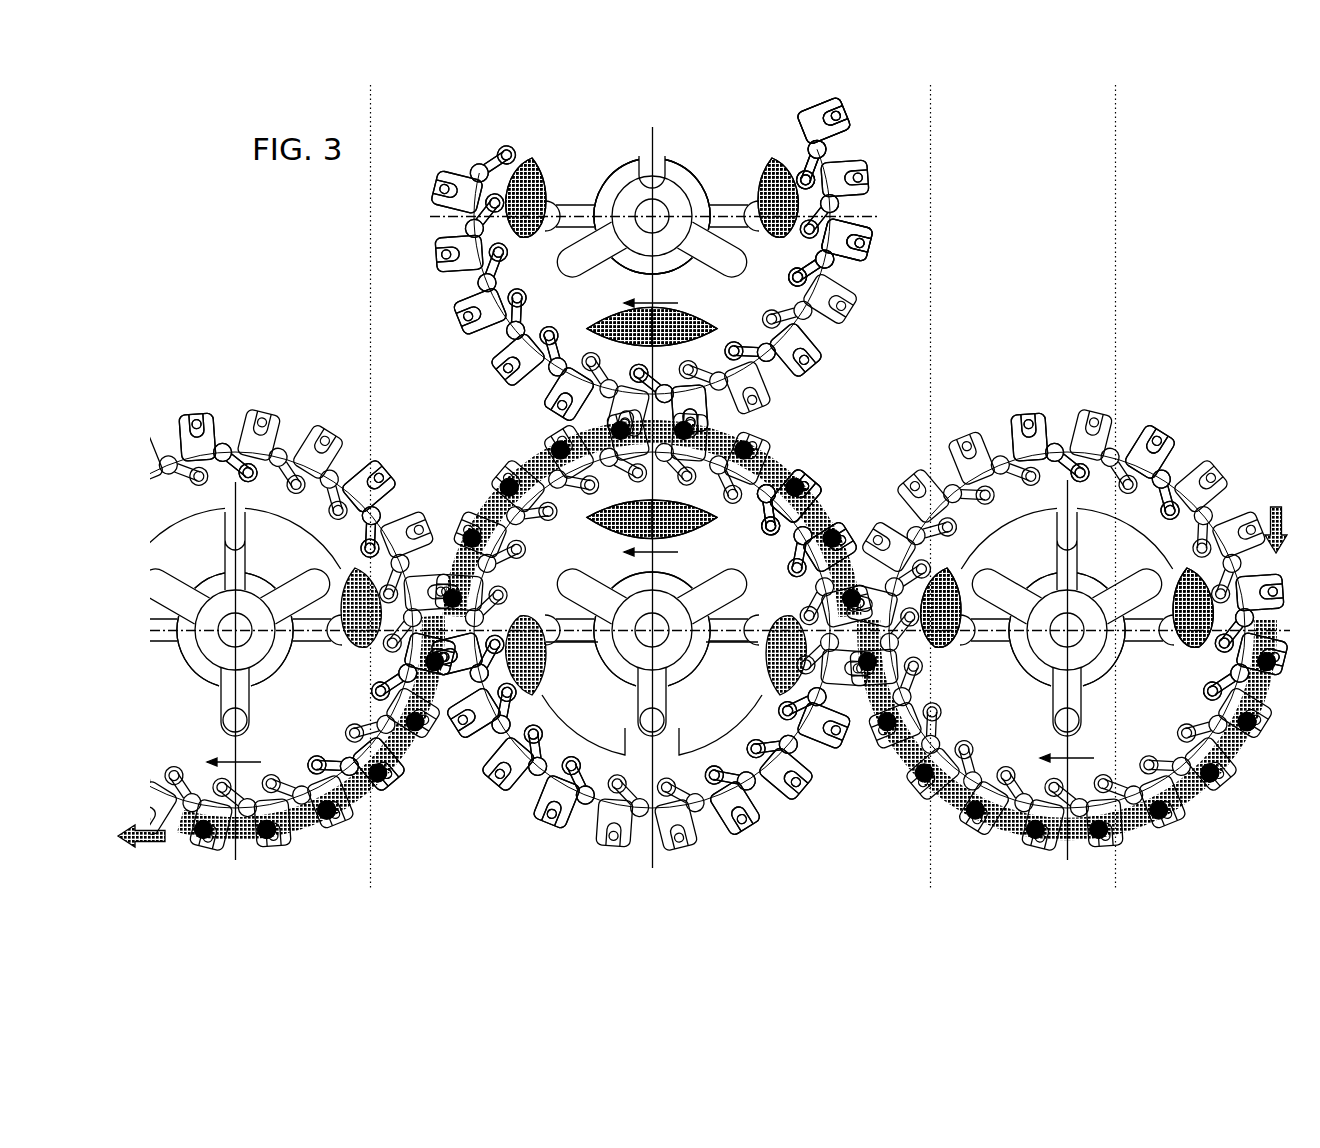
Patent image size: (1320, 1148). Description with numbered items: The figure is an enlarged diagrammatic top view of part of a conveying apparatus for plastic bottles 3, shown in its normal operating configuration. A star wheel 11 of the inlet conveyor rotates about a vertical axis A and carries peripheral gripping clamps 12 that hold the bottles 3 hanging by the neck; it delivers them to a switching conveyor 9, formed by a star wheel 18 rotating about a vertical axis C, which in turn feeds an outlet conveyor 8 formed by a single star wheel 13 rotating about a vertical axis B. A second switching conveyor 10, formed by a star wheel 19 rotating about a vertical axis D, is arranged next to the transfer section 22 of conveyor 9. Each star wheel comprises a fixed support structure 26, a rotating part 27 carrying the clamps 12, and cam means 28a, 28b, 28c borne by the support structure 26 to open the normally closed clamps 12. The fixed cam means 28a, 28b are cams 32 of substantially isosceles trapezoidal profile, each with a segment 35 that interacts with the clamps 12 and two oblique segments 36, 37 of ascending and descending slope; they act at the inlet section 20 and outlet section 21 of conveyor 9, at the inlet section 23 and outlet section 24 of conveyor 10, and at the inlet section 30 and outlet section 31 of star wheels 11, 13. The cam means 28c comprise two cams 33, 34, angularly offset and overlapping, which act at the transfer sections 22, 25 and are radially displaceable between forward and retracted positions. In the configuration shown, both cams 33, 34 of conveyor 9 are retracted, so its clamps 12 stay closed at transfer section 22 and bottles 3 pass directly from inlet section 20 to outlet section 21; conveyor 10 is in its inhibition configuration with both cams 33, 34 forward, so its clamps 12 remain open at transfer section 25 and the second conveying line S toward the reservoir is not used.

The plastic bottles 3 is at (1235, 770).
The outlet conveyor 8 is at (330, 845).
The switching conveyor 9 is at (505, 825).
The switching conveyor 10 is at (565, 148).
The star wheels 11 is at (1190, 440).
The gripping clamps 12 is at (465, 165).
The star wheel 13 is at (200, 420).
The star wheel 18 is at (550, 830).
The star wheel 19 is at (805, 150).
The inlet section 20 is at (800, 520).
The outlet section 21 is at (455, 700).
The transfer section 22 is at (770, 470).
The inlet section 23 is at (870, 215).
The outlet section 24 is at (450, 230).
The transfer section 25 is at (720, 405).
The fixed support structure 26 is at (600, 165).
The rotating part 27 is at (460, 290).
The cam means 28a is at (820, 158).
The cam means 28b is at (490, 160).
The cam means 28c is at (500, 355).
The inlet section 30 is at (1265, 595).
The outlet section 31 is at (855, 700).
The cams 32 is at (460, 200).
The cam 33 is at (690, 330).
The cam 34 is at (640, 330).
The segment 35 is at (870, 250).
The oblique segment 36 is at (770, 158).
The oblique segment 37 is at (855, 285).
The vertical axis A is at (1040, 590).
The vertical axis B is at (300, 670).
The vertical axis C is at (610, 655).
The vertical axis D is at (735, 185).
The second conveying line S is at (1175, 810).